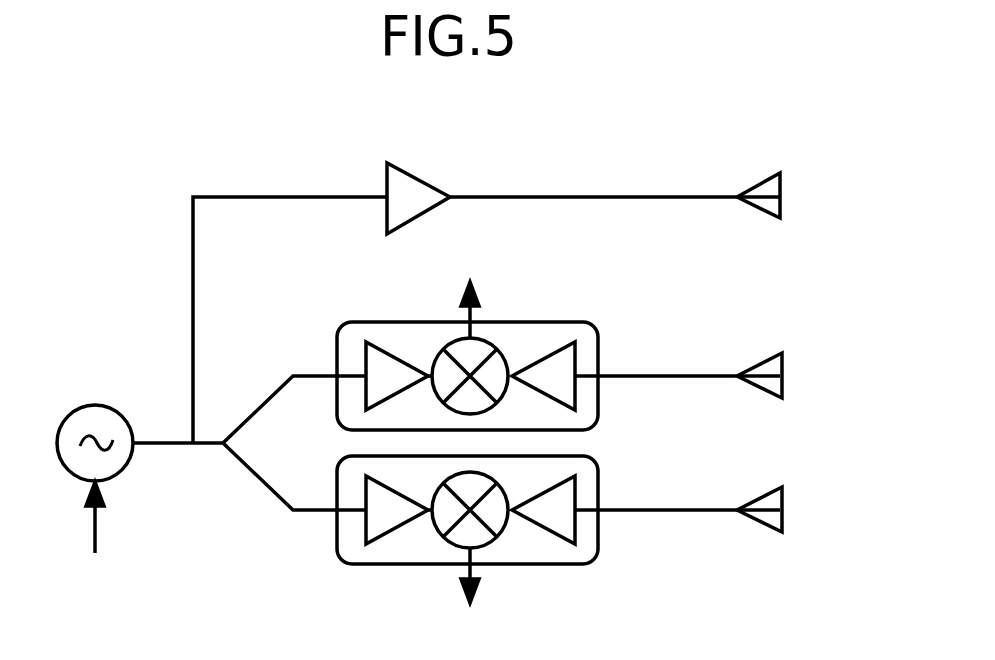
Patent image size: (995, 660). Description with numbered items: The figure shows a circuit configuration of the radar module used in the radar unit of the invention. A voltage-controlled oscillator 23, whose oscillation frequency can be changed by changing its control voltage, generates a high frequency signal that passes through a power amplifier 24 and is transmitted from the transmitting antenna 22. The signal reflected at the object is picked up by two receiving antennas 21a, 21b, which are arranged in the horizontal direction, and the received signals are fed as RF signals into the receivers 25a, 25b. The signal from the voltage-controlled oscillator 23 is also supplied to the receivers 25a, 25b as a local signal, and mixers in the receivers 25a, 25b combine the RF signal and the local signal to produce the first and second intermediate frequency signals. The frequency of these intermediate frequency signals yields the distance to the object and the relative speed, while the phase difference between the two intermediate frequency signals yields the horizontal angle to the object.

The receiving antenna 21a is at (775, 368).
The receiving antenna 21b is at (775, 502).
The transmitting antenna 22 is at (773, 190).
The voltage-controlled oscillator 23 is at (82, 407).
The power amplifier 24 is at (400, 175).
The receiver 25a is at (352, 348).
The receiver 25b is at (352, 553).